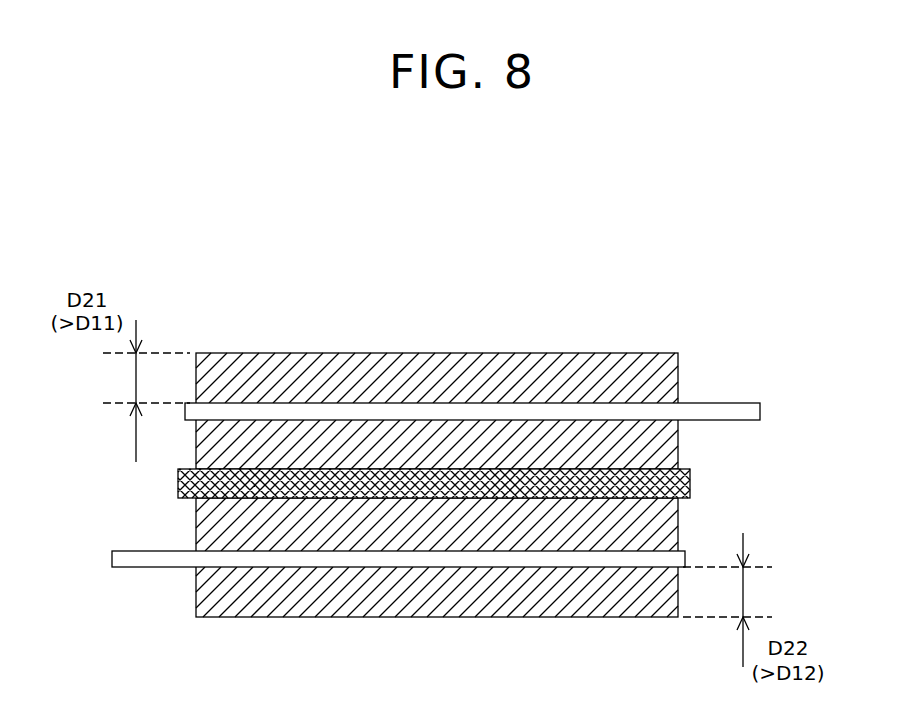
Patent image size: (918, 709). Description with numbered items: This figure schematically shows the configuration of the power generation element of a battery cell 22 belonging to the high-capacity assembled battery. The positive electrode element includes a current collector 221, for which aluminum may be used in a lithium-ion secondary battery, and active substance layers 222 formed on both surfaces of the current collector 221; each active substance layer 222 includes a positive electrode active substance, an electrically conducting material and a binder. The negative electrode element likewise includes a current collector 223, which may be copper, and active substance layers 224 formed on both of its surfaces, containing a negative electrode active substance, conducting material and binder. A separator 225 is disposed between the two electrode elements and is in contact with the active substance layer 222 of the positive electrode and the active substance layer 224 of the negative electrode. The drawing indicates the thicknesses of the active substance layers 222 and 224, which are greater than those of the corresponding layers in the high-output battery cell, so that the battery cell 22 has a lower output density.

The battery cell 22 is at (798, 352).
The current collector 221 is at (720, 410).
The active substance layer 222 is at (413, 425).
The current collector 223 is at (152, 558).
The active substance layer 224 is at (493, 528).
The separator 225 is at (683, 483).